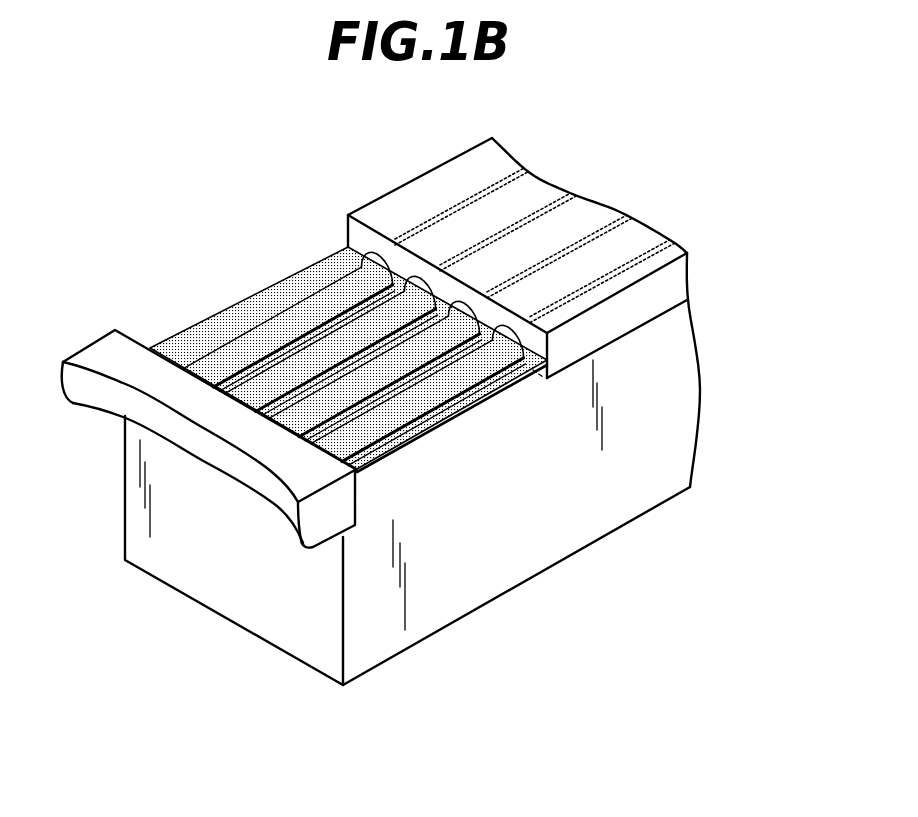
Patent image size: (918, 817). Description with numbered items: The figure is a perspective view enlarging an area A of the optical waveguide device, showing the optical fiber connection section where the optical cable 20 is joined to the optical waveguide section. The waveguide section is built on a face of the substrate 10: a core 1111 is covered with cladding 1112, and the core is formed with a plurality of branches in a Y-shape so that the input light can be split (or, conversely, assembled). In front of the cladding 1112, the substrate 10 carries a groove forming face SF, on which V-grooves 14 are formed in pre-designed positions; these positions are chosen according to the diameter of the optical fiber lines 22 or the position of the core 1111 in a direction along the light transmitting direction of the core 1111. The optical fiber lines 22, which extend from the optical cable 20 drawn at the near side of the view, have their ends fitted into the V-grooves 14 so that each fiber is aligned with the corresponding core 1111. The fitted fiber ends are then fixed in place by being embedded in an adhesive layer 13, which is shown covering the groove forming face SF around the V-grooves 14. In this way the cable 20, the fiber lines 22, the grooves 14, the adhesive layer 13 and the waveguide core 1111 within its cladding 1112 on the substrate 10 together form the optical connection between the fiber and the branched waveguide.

The area A is at (181, 161).
The substrate 10 is at (533, 545).
The adhesive layer 13 is at (427, 430).
The V-grooves 14 is at (362, 300).
The optical cable 20 is at (102, 345).
The optical fiber lines 22 is at (298, 405).
The core 1111 is at (668, 243).
The cladding 1112 is at (437, 193).
The groove forming face SF is at (497, 387).